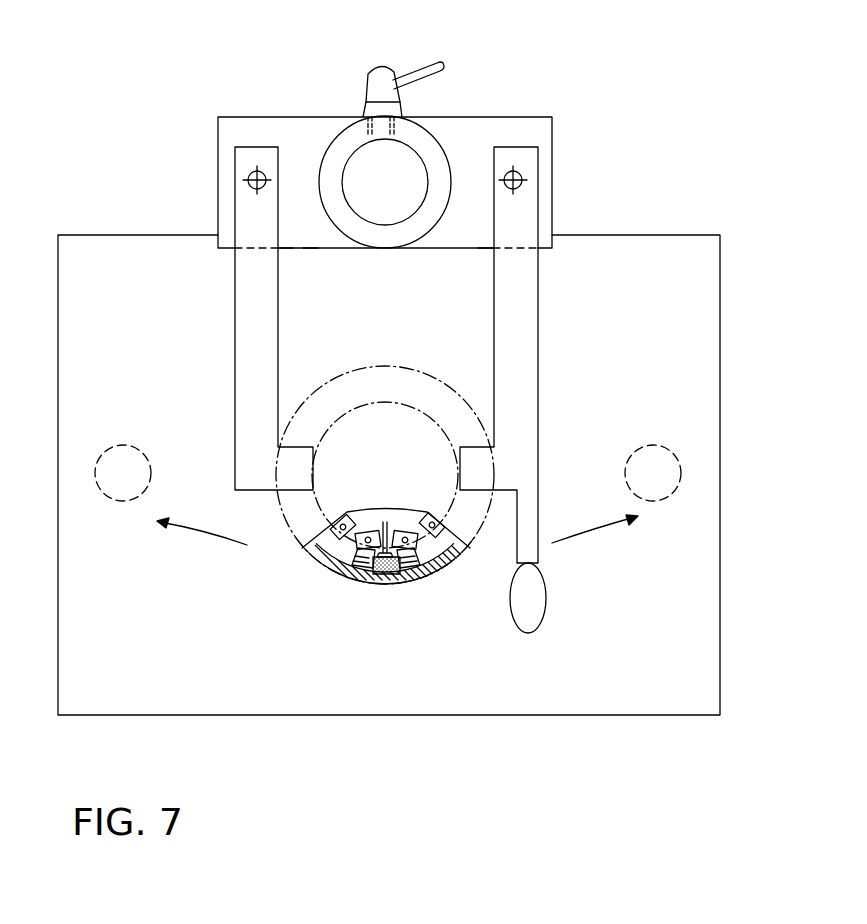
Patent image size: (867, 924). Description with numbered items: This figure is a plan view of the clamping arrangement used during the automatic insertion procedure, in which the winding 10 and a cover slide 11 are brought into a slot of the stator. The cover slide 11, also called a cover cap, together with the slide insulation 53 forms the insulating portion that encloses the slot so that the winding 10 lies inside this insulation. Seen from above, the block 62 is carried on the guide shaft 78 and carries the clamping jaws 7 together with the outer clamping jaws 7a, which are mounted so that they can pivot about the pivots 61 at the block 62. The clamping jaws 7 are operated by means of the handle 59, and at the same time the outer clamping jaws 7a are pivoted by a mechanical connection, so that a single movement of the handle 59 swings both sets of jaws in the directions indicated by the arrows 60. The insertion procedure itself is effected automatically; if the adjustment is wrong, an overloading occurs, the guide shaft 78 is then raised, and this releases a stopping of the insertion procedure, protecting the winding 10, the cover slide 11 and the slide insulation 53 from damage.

The clamping jaw 7 is at (525, 343).
The outer clamping jaw 7a is at (245, 345).
The winding 10 is at (395, 585).
The cover slide 11 is at (358, 580).
The slide insulation 53 is at (378, 585).
The handle 59 is at (538, 613).
The pivoting direction arrow 60 is at (197, 533).
The pivot 61 is at (257, 177).
The block 62 is at (505, 122).
The guide shaft 78 is at (402, 158).